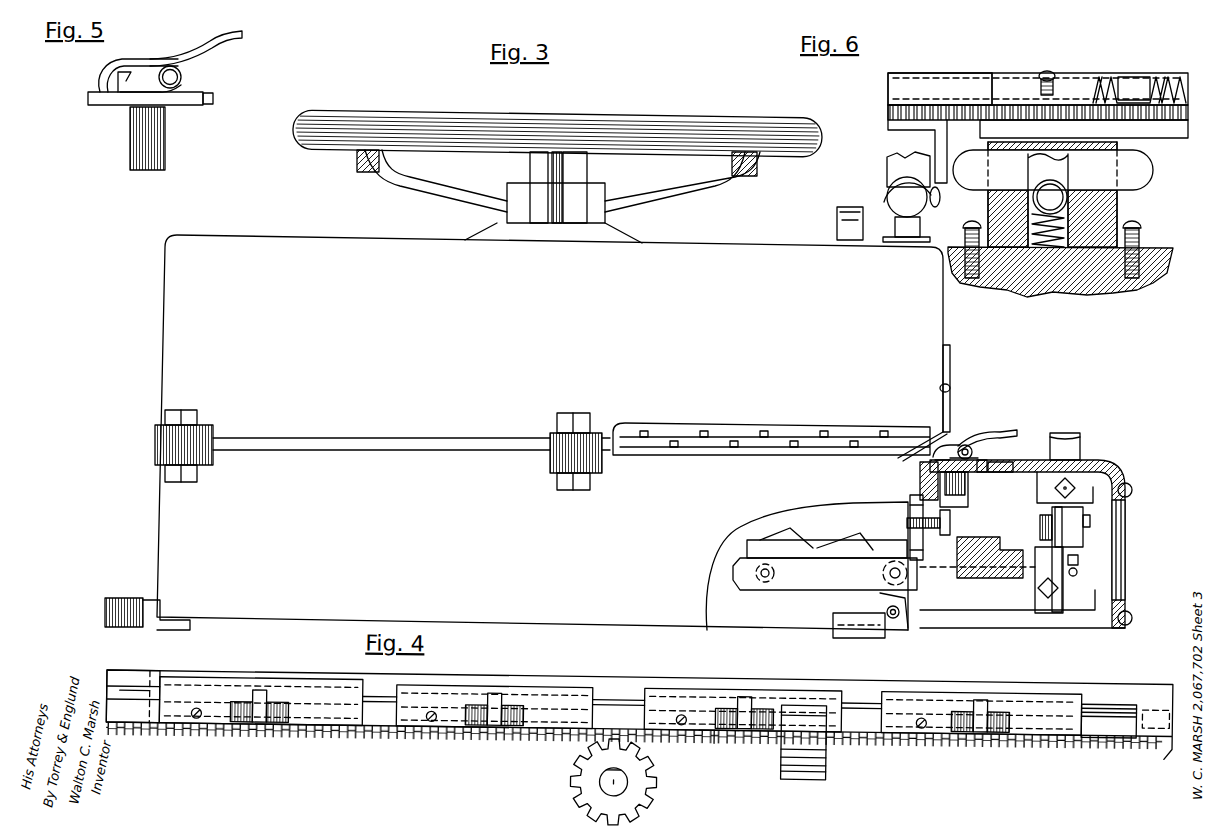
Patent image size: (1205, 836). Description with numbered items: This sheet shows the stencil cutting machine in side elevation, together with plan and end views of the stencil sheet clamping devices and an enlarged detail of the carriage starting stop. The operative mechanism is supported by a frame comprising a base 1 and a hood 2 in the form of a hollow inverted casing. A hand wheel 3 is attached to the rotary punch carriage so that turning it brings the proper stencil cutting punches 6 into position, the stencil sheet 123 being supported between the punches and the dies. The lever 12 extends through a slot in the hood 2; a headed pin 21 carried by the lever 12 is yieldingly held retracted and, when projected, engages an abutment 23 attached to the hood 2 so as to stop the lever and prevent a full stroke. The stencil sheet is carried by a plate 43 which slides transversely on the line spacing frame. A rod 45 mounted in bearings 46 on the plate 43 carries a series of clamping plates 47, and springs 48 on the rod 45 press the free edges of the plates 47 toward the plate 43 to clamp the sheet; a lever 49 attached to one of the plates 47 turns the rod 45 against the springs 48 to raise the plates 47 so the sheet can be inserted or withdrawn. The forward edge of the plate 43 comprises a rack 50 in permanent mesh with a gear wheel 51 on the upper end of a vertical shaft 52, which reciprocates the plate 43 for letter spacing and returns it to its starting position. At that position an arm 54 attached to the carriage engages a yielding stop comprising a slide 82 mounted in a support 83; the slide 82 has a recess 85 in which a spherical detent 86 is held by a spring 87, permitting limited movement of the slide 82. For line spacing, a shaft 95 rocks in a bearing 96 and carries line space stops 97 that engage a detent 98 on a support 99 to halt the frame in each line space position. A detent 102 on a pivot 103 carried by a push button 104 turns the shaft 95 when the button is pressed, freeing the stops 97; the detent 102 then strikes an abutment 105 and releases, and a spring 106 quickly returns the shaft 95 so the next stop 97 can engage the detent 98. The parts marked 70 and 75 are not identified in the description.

In FIG. 3, the base 1 is at (170, 520).
In FIG. 3, the hood 2 is at (170, 347).
In FIG. 3, the hand wheel 3 is at (400, 115).
In FIG. 3, the stencil cutting punches 6 is at (762, 440).
In FIG. 6, the lever 12 is at (896, 160).
In FIG. 6, the headed pin 21 is at (941, 210).
In FIG. 6, the abutment 23 is at (848, 207).
In FIG. 5, the plate 43 is at (108, 100).
In FIG. 6, the plate 43 is at (890, 112).
In FIG. 4, the plate 43 is at (1000, 671).
In FIG. 5, the rod 45 is at (180, 77).
In FIG. 3, the rod 45 is at (968, 446).
In FIG. 6, the rod 45 is at (1140, 112).
In FIG. 4, the rod 45 is at (855, 708).
In FIG. 5, the bearings 46 is at (183, 86).
In FIG. 3, the bearings 46 is at (975, 441).
In FIG. 6, the bearings 46 is at (950, 86).
In FIG. 4, the bearings 46 is at (1112, 724).
In FIG. 5, the clamping plates 47 is at (149, 61).
In FIG. 3, the clamping plates 47 is at (992, 465).
In FIG. 6, the clamping plates 47 is at (1068, 83).
In FIG. 4, the clamping plates 47 is at (1062, 689).
In FIG. 5, the springs 48 is at (112, 63).
In FIG. 3, the springs 48 is at (936, 448).
In FIG. 6, the springs 48 is at (1138, 78).
In FIG. 4, the springs 48 is at (978, 688).
In FIG. 5, the lever 49 is at (232, 33).
In FIG. 3, the lever 49 is at (1012, 430).
In FIG. 4, the lever 49 is at (827, 750).
In FIG. 5, the rack 50 is at (214, 98).
In FIG. 3, the rack 50 is at (982, 472).
In FIG. 4, the rack 50 is at (720, 730).
In FIG. 4, the gear wheel 51 is at (658, 771).
In FIG. 4, the vertical shaft 52 is at (600, 775).
In FIG. 5, the arm 54 is at (135, 153).
In FIG. 3, the arm 54 is at (966, 490).
In FIG. 6, the arm 54 is at (938, 140).
In FIG. 4, the arm 54 is at (1157, 714).
In FIG. 3, the housing 70 is at (1115, 470).
In FIG. 3, the plate 75 is at (920, 465).
In FIG. 6, the slide 82 is at (1140, 178).
In FIG. 6, the support 83 is at (1113, 213).
In FIG. 6, the recess 85 is at (1062, 171).
In FIG. 6, the spherical detent 86 is at (1045, 186).
In FIG. 6, the spring 87 is at (1050, 250).
In FIG. 3, the shaft 95 is at (818, 580).
In FIG. 3, the bearing 96 is at (978, 612).
In FIG. 3, the line space stops 97 is at (870, 545).
In FIG. 3, the detent 98 is at (920, 555).
In FIG. 3, the support 99 is at (952, 520).
In FIG. 3, the detent 102 is at (1058, 522).
In FIG. 3, the pivot 103 is at (1086, 526).
In FIG. 3, the push button 104 is at (1080, 441).
In FIG. 3, the abutment 105 is at (1072, 597).
In FIG. 3, the spring 106 is at (895, 620).
In FIG. 3, the stencil sheet 123 is at (655, 447).